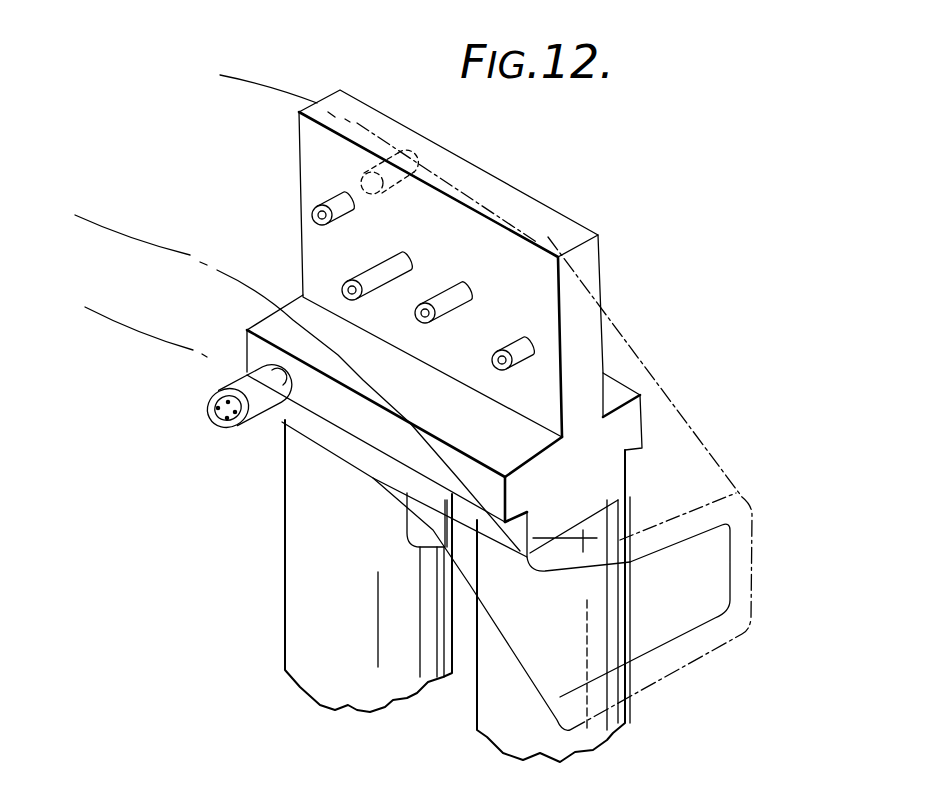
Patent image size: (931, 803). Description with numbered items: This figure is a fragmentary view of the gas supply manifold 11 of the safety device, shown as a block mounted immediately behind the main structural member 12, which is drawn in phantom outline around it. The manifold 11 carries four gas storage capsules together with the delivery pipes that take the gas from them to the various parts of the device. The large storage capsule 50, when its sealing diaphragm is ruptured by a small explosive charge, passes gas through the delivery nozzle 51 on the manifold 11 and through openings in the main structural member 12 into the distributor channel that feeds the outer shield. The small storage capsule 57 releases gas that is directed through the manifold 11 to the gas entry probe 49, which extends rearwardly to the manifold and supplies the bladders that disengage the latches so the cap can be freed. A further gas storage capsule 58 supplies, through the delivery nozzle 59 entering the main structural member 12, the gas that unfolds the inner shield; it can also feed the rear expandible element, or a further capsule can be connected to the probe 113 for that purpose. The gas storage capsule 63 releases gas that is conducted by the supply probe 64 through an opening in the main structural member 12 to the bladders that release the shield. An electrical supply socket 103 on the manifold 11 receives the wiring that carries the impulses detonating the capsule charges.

The manifold 11 is at (485, 171).
The main structural member 12 is at (678, 423).
The gas entry probe 49 is at (400, 262).
The storage capsule 50 is at (563, 656).
The delivery nozzle 51 is at (523, 343).
The small storage capsule 57 is at (418, 507).
The gas storage capsule 58 is at (353, 609).
The delivery nozzle 59 is at (335, 200).
The gas storage capsule 63 is at (480, 567).
The supply probe 64 is at (460, 292).
The electrical supply socket 103 is at (257, 423).
The probe 113 is at (407, 157).